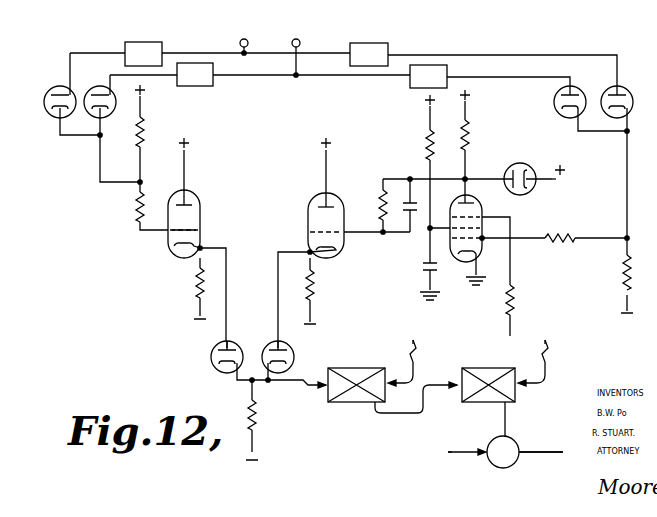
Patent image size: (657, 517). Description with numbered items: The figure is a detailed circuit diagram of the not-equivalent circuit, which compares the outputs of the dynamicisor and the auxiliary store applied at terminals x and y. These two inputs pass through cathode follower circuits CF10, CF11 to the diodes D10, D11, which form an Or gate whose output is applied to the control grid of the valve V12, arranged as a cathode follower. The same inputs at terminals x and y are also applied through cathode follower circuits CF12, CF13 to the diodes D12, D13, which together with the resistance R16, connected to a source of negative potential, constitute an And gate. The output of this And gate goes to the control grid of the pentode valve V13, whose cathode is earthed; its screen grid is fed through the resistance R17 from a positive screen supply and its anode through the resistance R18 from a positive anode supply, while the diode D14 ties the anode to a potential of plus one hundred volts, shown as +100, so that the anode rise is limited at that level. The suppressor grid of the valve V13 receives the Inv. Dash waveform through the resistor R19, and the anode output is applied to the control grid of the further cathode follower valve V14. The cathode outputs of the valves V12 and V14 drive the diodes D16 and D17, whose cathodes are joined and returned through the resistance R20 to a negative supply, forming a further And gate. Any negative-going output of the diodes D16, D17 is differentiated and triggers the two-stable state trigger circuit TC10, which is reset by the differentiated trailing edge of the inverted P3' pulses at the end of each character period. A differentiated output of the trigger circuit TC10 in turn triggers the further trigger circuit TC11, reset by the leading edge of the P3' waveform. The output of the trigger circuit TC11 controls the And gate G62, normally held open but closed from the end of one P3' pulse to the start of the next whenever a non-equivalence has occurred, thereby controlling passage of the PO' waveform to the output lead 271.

The cathode follower circuit CF10 is at (152, 34).
The cathode follower circuit CF11 is at (182, 86).
The cathode follower circuit CF12 is at (370, 43).
The cathode follower circuit CF13 is at (410, 88).
The diode D10 is at (50, 92).
The diode D11 is at (114, 116).
The diode D12 is at (637, 78).
The diode D13 is at (549, 102).
The diode D14 is at (533, 187).
The diode D16 is at (211, 357).
The diode D17 is at (294, 353).
The valve V12 is at (202, 224).
The pentode valve V13 is at (481, 234).
The cathode follower valve V14 is at (311, 222).
The resistance R16 is at (605, 272).
The resistance R17 is at (411, 145).
The resistance R18 is at (484, 135).
The resistor R19 is at (529, 299).
The resistance R20 is at (273, 419).
The two-stable state trigger circuit TC10 is at (356, 375).
The two-stable state trigger circuit TC11 is at (512, 395).
The And gate G62 is at (509, 446).
The lead 271 is at (532, 458).
The positive potential of one hundred volts 100 is at (575, 173).
The terminal x is at (242, 35).
The terminal y is at (294, 45).
The P3' waveform P3' is at (490, 339).
The PO' waveform PO' is at (434, 451).